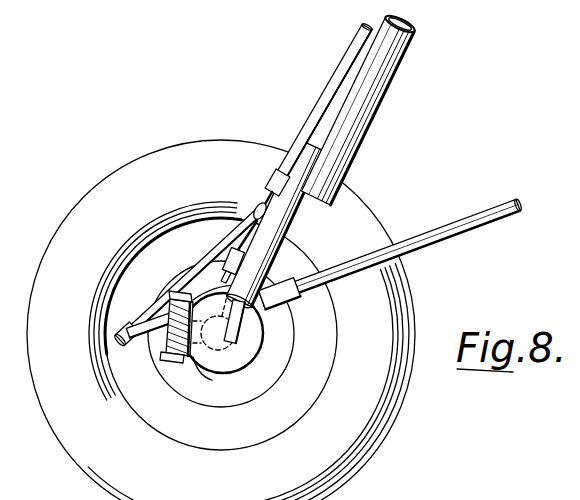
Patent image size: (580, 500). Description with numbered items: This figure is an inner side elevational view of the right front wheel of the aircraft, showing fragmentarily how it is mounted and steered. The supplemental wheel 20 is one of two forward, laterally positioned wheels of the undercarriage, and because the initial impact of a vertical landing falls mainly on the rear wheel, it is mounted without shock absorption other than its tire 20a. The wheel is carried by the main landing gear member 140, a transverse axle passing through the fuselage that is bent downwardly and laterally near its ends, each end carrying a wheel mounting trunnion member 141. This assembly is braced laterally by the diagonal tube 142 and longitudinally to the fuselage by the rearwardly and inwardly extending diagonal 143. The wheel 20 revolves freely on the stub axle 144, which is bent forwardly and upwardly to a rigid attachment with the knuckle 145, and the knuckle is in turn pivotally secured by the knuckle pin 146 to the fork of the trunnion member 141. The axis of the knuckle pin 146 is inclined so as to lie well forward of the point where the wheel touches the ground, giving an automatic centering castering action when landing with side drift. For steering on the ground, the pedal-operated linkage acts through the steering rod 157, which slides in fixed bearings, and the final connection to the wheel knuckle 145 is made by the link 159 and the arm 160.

The supplemental wheel 20 is at (213, 326).
The tire 20a is at (221, 320).
The main landing gear member 140 is at (362, 132).
The wheel mounting trunnion member 141 is at (207, 368).
The diagonal tube 142 is at (290, 223).
The diagonal 143 is at (463, 221).
The stub axle 144 is at (225, 346).
The knuckle 145 is at (172, 306).
The knuckle pin 146 is at (172, 363).
The steering rod 157 is at (335, 84).
The link 159 is at (207, 258).
The arm 160 is at (150, 335).